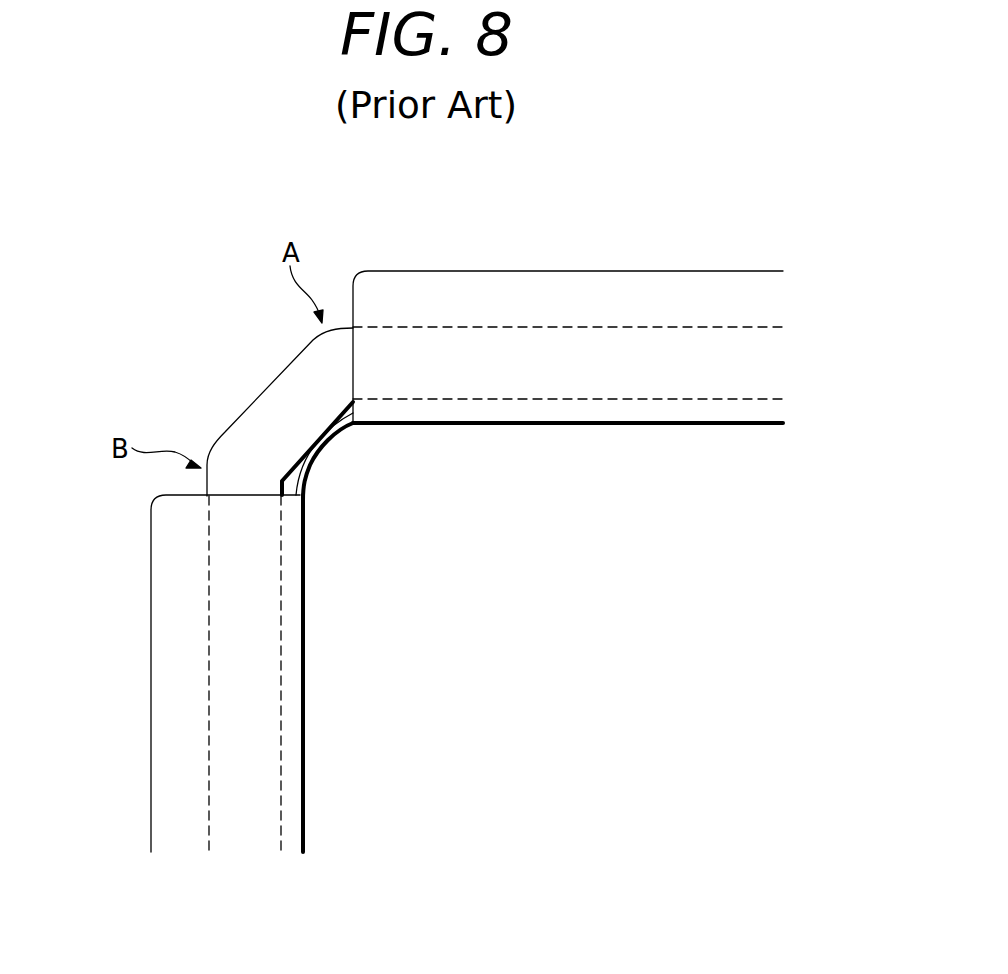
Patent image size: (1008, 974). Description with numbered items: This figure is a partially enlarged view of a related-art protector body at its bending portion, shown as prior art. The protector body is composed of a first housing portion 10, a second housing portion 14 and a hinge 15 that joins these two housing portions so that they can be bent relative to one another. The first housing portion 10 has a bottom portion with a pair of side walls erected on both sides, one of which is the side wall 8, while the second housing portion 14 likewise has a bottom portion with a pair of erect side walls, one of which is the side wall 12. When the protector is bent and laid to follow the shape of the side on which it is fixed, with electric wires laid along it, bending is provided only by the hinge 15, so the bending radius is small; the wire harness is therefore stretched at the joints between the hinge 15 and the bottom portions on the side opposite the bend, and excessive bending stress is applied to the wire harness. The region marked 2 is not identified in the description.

The first housing portion 10 is at (603, 258).
The side wall 8 is at (591, 377).
The bent portion 2 is at (272, 415).
The hinge 15 is at (327, 450).
The second housing portion 14 is at (145, 712).
The side wall 12 is at (263, 773).